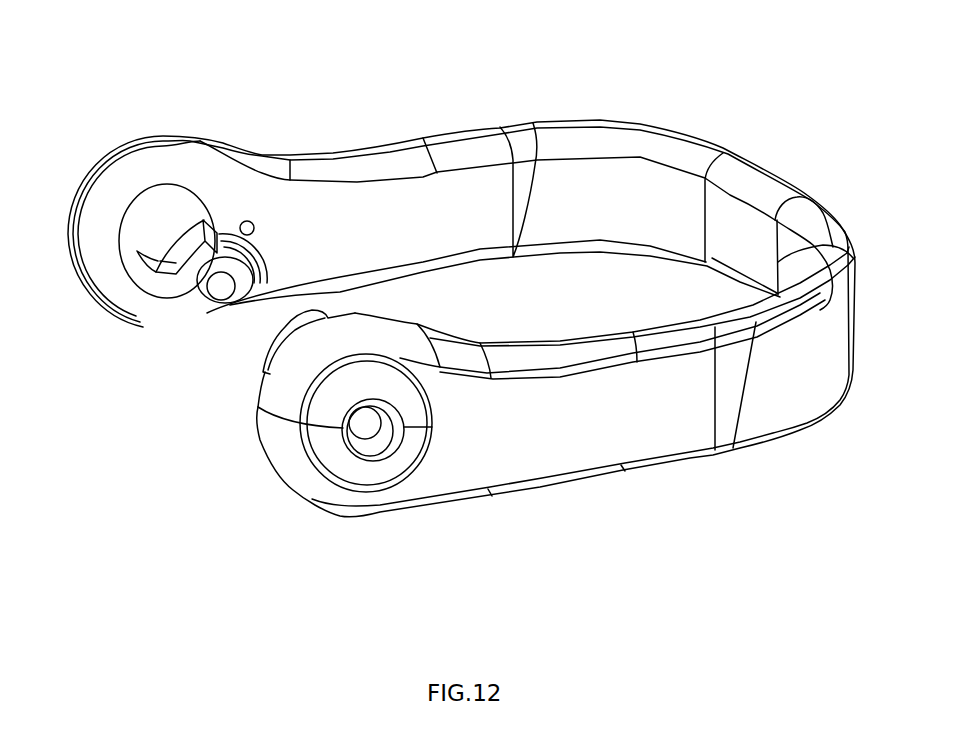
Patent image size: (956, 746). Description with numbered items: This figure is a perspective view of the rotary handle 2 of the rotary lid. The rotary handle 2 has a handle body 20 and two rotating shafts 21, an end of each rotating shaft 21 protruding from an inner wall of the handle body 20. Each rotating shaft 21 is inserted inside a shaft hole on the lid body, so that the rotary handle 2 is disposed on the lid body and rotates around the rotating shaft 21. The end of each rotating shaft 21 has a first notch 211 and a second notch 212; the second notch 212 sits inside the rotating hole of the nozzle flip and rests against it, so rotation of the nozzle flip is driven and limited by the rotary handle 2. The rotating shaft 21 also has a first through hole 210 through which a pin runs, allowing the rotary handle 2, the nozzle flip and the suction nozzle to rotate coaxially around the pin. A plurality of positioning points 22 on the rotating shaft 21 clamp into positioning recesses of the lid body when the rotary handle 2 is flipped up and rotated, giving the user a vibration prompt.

The rotary handle 2 is at (528, 64).
The handle body 20 is at (657, 127).
The rotating shaft 21 is at (187, 207).
The positioning point 22 is at (253, 223).
The first through hole 210 is at (230, 330).
The first notch 211 is at (170, 296).
The second notch 212 is at (125, 318).